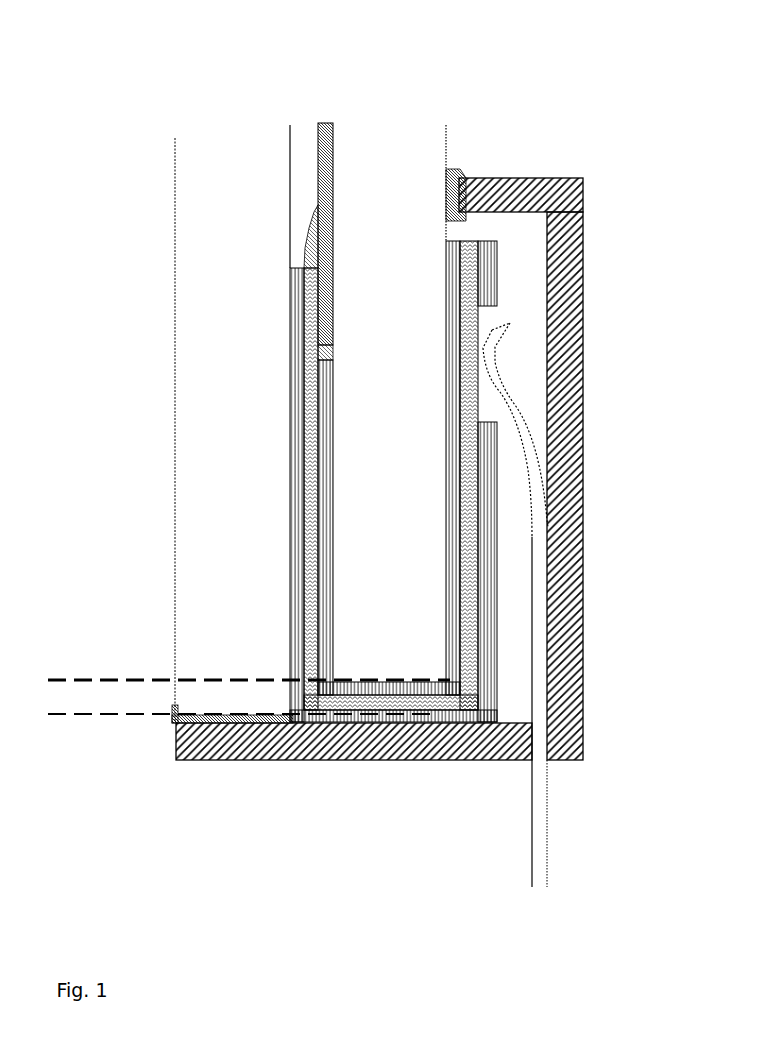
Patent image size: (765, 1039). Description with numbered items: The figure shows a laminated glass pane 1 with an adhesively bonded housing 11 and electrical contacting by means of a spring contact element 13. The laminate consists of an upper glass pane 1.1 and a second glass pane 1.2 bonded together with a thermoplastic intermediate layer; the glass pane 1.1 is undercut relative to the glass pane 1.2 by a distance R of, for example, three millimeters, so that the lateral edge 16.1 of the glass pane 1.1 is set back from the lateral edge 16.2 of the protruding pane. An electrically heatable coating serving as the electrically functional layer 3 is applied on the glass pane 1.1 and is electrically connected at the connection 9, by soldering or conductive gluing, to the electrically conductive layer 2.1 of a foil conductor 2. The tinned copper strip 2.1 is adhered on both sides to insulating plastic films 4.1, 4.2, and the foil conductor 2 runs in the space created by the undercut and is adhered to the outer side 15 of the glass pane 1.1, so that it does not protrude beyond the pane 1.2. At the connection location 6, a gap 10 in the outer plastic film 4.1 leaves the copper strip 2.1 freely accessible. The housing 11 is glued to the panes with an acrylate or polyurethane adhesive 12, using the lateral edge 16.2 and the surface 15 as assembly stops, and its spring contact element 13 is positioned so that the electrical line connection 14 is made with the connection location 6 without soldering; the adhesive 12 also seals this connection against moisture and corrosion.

The laminated glass pane 1 is at (175, 138).
The glass pane 1.2 is at (223, 192).
The electrical line connection 9 is at (308, 225).
The electrically functional layer 3 is at (334, 190).
The glass pane 1.1 is at (380, 182).
The outer side of glass pane 15 is at (452, 138).
The adhesive 12 is at (462, 167).
The foil conductor 2 is at (495, 243).
The housing 11 is at (583, 185).
The connection location 6 is at (487, 310).
The electrical line connection 14 is at (494, 352).
The gap 10 is at (487, 410).
The spring contact element 13 is at (530, 462).
The distance of the undercut R is at (233, 697).
The electrically insulating foil 4.1 is at (268, 762).
The lateral edge of glass pane 16.2 is at (176, 762).
The electrically conductive layer 2.1 is at (342, 752).
The electrically insulating foil 4.2 is at (391, 690).
The lateral edge of glass pane 16.1 is at (433, 717).